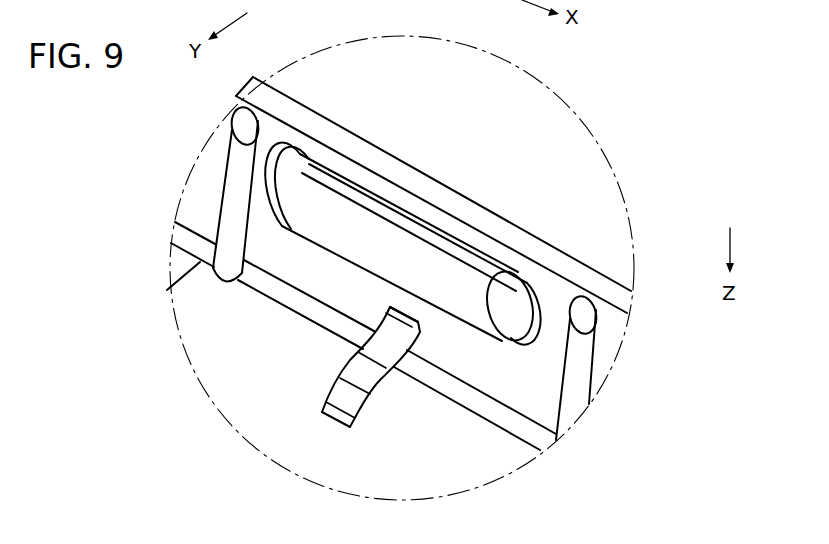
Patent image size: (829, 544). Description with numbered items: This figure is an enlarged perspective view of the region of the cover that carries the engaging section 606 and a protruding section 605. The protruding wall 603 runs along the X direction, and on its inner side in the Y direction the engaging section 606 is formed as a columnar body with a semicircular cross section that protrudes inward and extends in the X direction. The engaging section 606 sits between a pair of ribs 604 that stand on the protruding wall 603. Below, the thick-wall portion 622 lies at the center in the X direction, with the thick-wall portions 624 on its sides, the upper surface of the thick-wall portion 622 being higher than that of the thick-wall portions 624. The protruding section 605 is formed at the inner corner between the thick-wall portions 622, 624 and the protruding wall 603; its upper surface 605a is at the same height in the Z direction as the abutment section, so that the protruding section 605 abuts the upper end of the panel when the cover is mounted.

The protruding wall 603 is at (209, 137).
The ribs 604 is at (227, 190).
The protruding section 605 is at (368, 378).
The upper surface 605a is at (380, 343).
The engaging section 606 is at (482, 322).
The thick-wall portion 622 is at (196, 346).
The thick-wall portions 624 is at (176, 268).